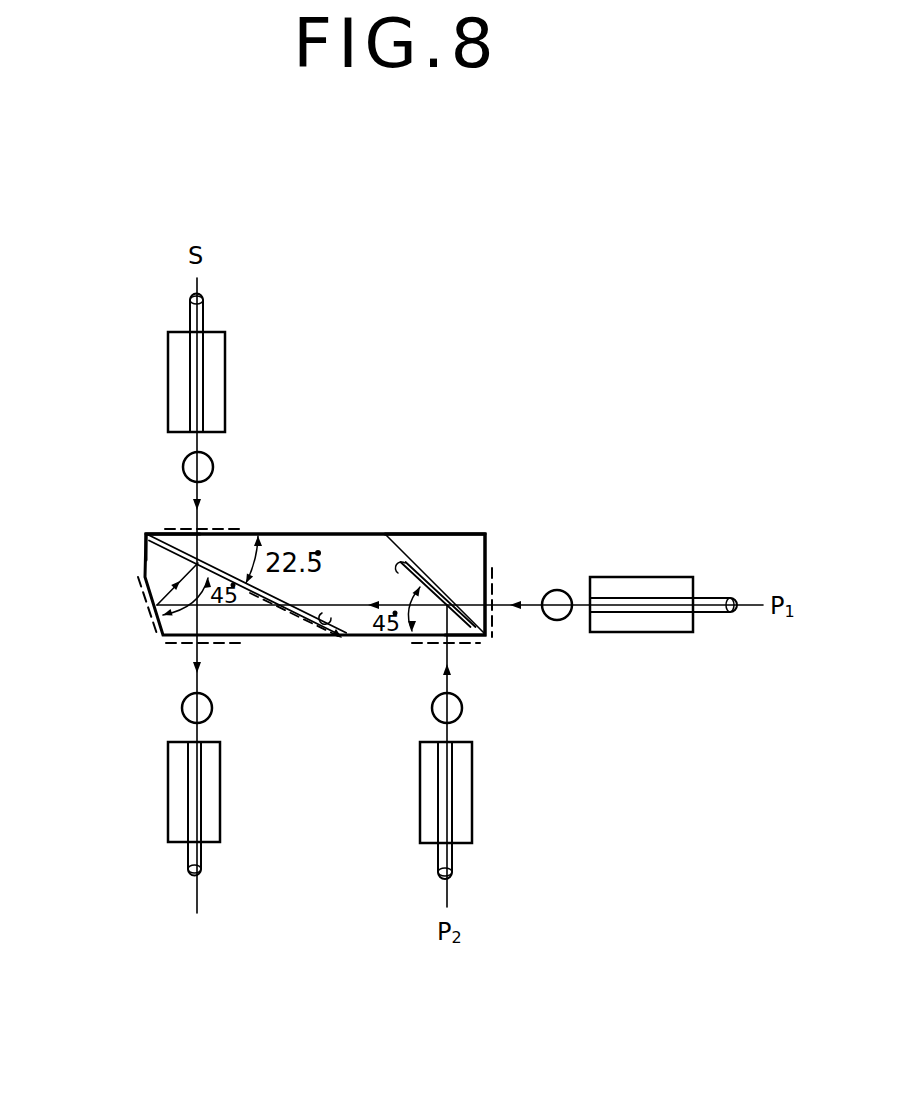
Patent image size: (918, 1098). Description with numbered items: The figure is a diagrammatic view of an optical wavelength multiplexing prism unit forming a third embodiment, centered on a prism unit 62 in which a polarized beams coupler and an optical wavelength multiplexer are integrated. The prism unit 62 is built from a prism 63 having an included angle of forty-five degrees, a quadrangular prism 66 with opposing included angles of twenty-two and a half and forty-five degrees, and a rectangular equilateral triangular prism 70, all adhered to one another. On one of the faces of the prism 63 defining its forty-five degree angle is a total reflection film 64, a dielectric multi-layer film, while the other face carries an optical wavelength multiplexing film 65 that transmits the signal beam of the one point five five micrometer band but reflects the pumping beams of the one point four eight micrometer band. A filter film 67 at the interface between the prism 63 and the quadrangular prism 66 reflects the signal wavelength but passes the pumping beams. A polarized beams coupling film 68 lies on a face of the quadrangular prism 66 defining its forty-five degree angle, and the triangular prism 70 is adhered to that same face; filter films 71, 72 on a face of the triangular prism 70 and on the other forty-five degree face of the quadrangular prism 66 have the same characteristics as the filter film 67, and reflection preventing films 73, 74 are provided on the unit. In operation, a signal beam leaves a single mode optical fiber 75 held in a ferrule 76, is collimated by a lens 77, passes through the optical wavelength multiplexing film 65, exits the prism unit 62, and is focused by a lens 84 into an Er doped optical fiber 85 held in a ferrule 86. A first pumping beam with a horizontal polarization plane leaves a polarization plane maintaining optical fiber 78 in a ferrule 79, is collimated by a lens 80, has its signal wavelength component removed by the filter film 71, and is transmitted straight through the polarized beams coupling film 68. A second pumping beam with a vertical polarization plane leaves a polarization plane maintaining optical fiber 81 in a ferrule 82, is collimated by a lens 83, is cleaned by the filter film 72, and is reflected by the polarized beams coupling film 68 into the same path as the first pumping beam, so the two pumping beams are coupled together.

The prism unit 62 is at (374, 520).
The prism 63 is at (262, 626).
The total reflection film 64 is at (143, 594).
The optical wavelength multiplexing film 65 is at (208, 576).
The quadrangular prism 66 is at (333, 533).
The filter film 67 is at (330, 632).
The polarized beams coupling film 68 is at (402, 555).
The rectangular equilateral triangular prism 70 is at (470, 545).
The filter film 71 is at (508, 540).
The filter film 72 is at (426, 650).
The reflection preventing film 73 is at (165, 529).
The reflection preventing film 74 is at (185, 643).
The single mode optical fiber 75 is at (189, 306).
The ferrule 76 is at (168, 372).
The lens 77 is at (183, 464).
The polarization plane maintaining optical fiber 78 is at (712, 600).
The ferrule 79 is at (665, 632).
The lens 80 is at (557, 590).
The polarization plane maintaining optical fiber 81 is at (452, 868).
The ferrule 82 is at (472, 795).
The lens 83 is at (462, 708).
The lens 84 is at (182, 708).
The Er doped optical fiber 85 is at (188, 873).
The ferrule 86 is at (168, 806).